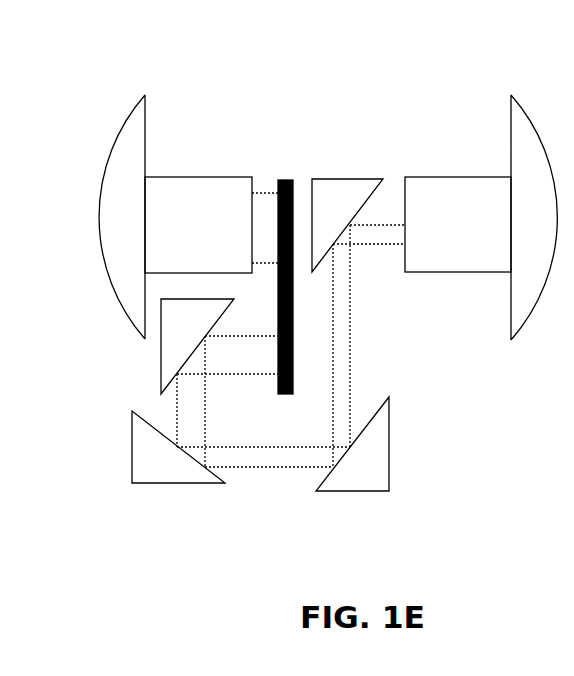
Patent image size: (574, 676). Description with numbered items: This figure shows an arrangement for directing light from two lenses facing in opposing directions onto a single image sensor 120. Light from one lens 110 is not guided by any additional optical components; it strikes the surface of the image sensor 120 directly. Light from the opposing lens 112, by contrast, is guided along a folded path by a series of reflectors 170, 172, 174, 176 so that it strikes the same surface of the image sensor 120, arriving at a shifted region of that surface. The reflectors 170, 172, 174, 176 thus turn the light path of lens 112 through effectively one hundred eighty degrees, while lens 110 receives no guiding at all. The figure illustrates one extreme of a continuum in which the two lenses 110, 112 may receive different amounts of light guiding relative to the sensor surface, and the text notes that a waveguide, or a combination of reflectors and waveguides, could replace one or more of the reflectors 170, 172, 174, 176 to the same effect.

The lens 110 is at (175, 217).
The lens 112 is at (481, 217).
The image sensor 120 is at (285, 180).
The reflector 170 is at (326, 188).
The reflector 172 is at (389, 452).
The reflector 174 is at (165, 484).
The reflector 176 is at (130, 358).